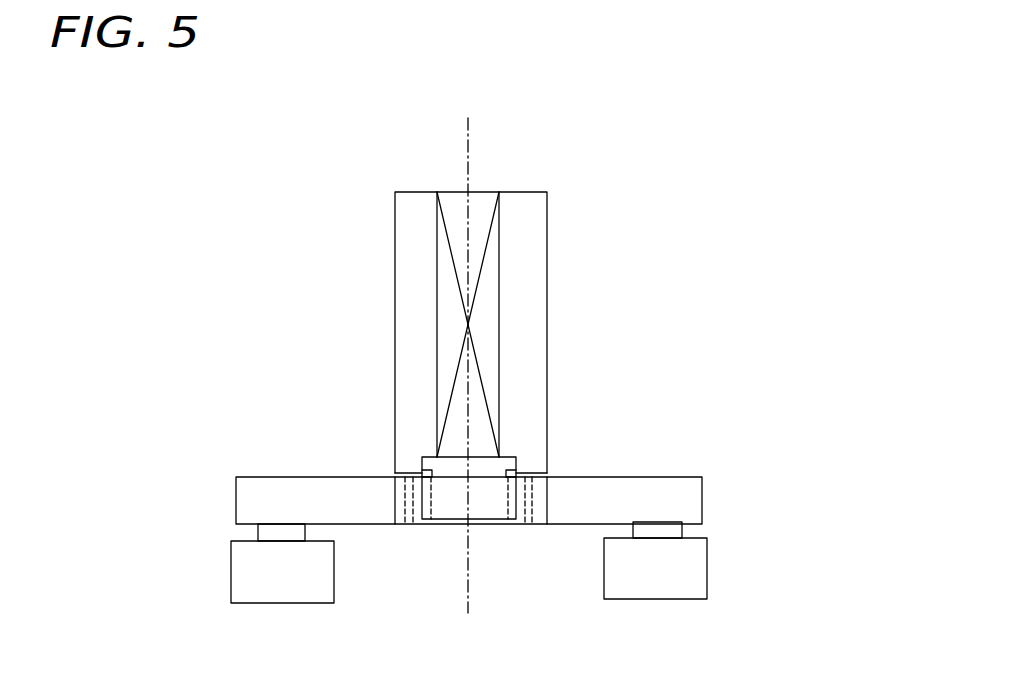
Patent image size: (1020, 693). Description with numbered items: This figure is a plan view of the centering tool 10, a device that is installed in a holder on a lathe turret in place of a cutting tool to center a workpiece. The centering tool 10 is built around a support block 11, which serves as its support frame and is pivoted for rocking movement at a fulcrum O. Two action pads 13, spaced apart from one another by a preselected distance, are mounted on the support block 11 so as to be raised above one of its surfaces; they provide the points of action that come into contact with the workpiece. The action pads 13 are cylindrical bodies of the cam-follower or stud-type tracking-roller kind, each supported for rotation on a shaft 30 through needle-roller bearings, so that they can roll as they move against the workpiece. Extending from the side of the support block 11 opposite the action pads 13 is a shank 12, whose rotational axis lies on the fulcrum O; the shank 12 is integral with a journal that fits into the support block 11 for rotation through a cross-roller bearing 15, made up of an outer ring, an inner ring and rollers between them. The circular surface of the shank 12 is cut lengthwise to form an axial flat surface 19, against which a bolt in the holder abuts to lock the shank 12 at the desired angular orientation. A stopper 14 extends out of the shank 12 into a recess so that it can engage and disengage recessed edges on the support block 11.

The centering tool 10 is at (633, 355).
The support block 11 is at (615, 493).
The shank 12 is at (409, 326).
The action pads 13 is at (286, 585).
The stopper 14 is at (453, 507).
The cross-roller bearing 15 is at (408, 493).
The flat surface 19 is at (452, 306).
The shafts 30 is at (272, 533).
The fulcrum O is at (469, 368).